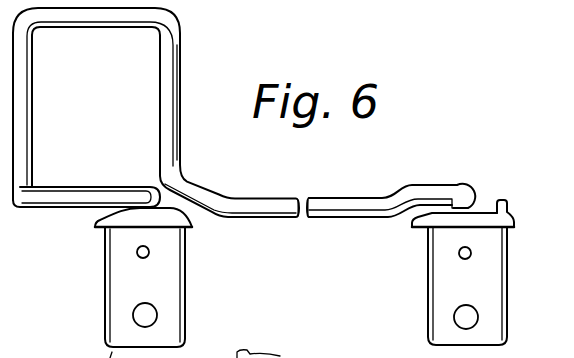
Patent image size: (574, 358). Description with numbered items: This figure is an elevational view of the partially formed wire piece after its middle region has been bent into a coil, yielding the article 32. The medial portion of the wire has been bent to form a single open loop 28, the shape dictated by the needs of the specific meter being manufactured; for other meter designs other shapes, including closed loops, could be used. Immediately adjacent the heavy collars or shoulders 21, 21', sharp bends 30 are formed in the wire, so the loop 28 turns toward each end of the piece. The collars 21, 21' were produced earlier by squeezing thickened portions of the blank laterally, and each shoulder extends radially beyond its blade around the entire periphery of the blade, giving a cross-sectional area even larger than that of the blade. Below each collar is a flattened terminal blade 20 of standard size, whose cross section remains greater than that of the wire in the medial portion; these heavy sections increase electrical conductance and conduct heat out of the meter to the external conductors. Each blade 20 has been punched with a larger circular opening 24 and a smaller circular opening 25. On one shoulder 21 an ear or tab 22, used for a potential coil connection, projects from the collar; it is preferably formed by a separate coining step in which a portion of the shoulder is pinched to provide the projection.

The terminal blades 20 is at (105, 285).
The collar 21 is at (463, 192).
The collar 21' is at (113, 229).
The ear or tab 22 is at (510, 201).
The larger circular opening 24 is at (156, 312).
The smaller circular opening 25 is at (149, 252).
The single open loop 28 is at (182, 63).
The sharp bends 30 is at (118, 190).
The article 32 is at (300, 192).